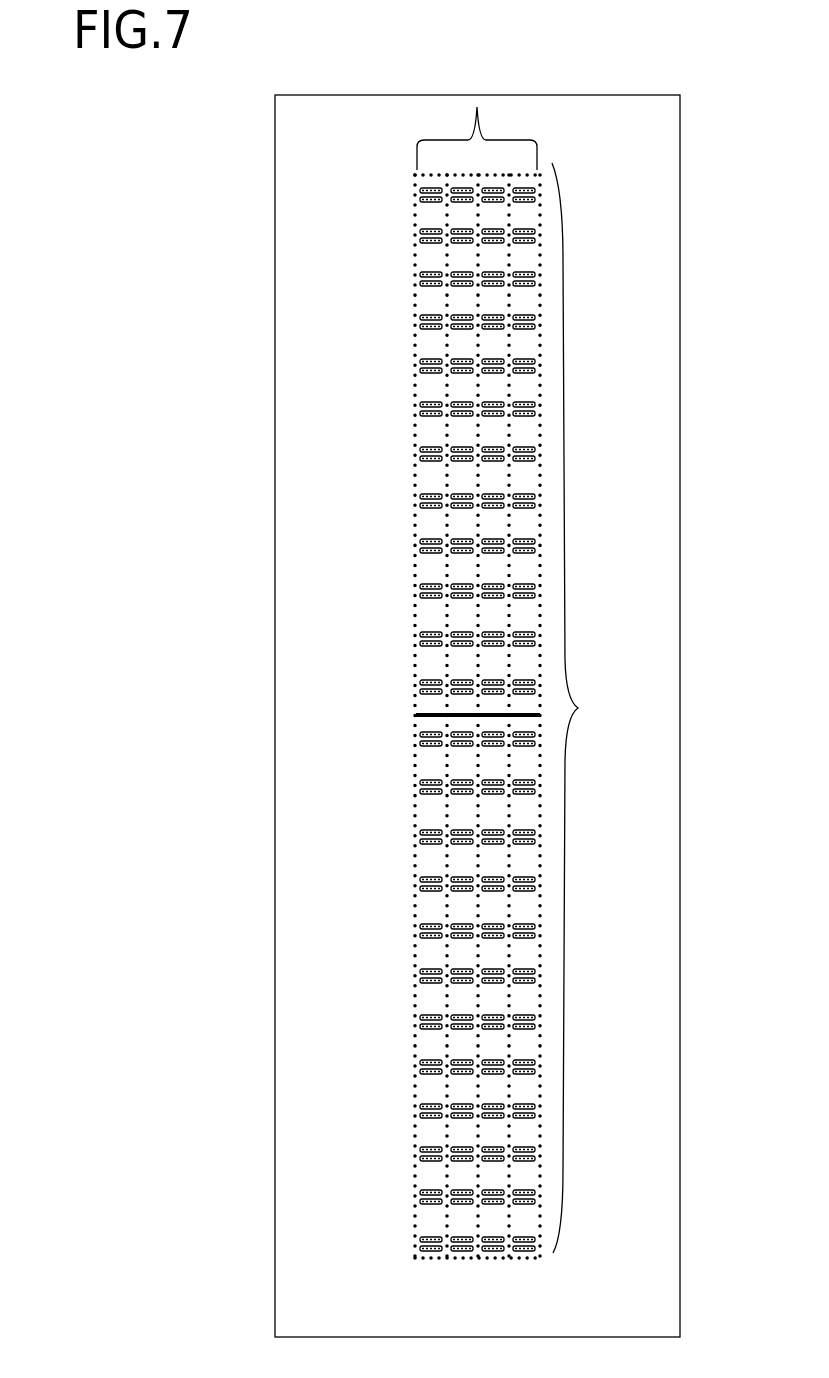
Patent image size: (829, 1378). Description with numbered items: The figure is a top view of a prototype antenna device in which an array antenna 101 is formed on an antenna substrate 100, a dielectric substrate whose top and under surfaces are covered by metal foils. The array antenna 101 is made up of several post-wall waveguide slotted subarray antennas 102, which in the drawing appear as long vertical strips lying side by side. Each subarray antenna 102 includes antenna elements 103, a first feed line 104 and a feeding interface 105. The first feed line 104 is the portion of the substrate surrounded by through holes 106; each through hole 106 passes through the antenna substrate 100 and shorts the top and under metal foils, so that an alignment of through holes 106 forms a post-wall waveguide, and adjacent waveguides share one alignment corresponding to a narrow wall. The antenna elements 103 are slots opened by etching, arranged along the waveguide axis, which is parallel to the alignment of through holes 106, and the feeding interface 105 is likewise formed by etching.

The antenna substrate 100 is at (670, 204).
The array antenna 101 is at (477, 113).
The subarray antenna 102 is at (603, 708).
The antenna element 103 is at (533, 408).
The first feed line 104 is at (522, 302).
The feeding interface 105 is at (432, 720).
The through hole 106 is at (540, 560).